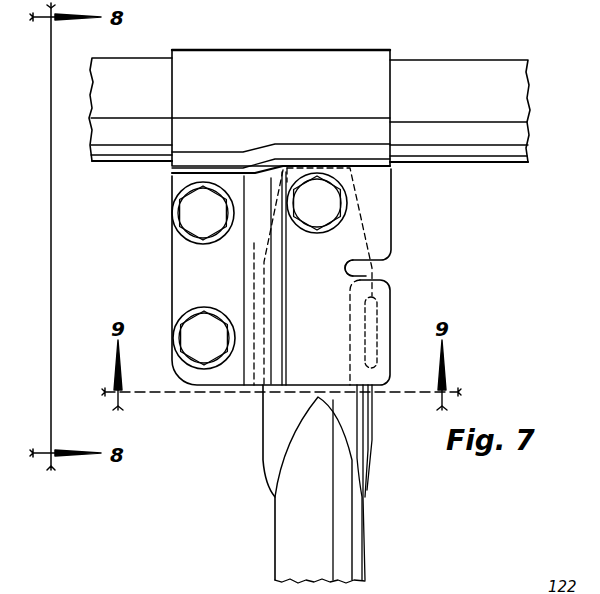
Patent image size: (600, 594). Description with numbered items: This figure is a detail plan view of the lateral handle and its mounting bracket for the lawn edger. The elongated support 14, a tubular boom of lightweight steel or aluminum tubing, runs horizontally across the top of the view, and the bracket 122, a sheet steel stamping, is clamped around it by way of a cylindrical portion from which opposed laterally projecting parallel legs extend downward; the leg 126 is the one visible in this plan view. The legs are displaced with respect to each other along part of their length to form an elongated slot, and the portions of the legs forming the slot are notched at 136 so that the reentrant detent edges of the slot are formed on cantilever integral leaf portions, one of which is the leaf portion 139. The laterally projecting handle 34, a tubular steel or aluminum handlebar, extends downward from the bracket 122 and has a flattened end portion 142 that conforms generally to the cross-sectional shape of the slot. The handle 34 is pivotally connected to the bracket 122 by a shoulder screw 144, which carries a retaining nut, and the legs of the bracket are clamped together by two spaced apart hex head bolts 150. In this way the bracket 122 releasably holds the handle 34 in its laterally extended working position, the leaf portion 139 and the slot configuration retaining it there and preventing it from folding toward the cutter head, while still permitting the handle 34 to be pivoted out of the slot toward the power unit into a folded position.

The elongated support 14 is at (470, 59).
The laterally projecting handle 34 is at (380, 532).
The bracket 122 is at (300, 50).
The leg 126 is at (237, 383).
The notch 136 is at (356, 273).
The leaf portion 139 is at (383, 320).
The flattened end portion 142 is at (365, 415).
The shoulder screw 144 is at (335, 206).
The hex head bolts 150 is at (178, 214).